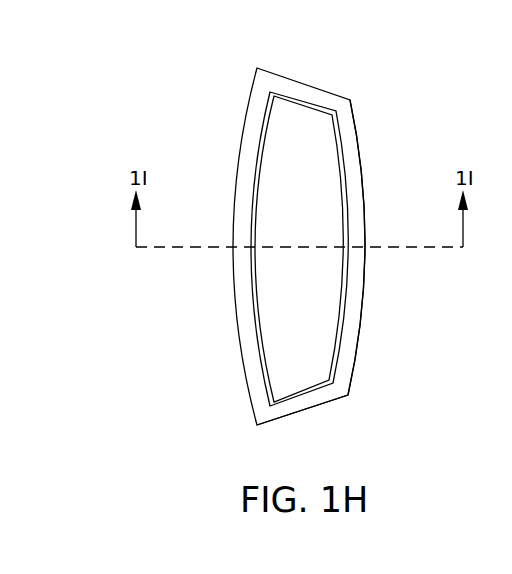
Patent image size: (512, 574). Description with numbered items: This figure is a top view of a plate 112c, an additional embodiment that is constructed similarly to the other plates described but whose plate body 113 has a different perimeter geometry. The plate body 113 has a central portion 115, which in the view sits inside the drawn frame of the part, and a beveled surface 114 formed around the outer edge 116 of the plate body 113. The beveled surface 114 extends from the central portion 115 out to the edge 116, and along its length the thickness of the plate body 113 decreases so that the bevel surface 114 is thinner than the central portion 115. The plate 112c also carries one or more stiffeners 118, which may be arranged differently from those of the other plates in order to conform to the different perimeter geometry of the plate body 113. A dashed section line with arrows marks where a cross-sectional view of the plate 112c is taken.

The plate 112c is at (256, 268).
The plate body 113 is at (266, 432).
The beveled surface 114 is at (352, 167).
The central portion 115 is at (320, 213).
The outer edge 116 is at (367, 313).
The stiffener 118 is at (312, 103).